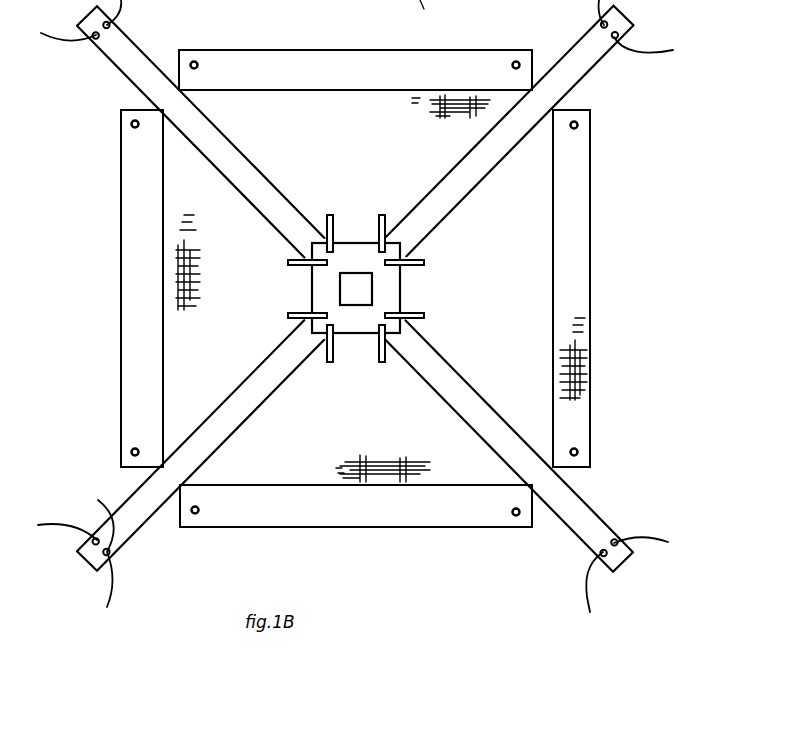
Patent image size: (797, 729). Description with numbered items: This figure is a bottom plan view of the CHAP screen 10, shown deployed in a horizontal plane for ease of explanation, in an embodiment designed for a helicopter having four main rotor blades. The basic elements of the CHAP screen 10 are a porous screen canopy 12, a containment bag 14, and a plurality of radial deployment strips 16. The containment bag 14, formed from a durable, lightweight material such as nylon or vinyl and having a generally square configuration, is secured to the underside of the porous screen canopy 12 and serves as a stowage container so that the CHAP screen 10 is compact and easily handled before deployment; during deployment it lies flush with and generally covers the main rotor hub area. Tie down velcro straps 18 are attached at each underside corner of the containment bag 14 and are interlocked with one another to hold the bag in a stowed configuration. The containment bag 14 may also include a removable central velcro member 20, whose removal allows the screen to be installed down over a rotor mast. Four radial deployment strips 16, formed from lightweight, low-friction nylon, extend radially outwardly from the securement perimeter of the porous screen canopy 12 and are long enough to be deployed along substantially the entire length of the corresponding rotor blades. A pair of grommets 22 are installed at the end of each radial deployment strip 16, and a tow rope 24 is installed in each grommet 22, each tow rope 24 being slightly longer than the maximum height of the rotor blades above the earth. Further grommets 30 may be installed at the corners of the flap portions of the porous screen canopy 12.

The CHAP screen 10 is at (367, 306).
The porous screen canopy 12 is at (592, 201).
The containment bag 14 is at (388, 286).
The radial deployment strips 16 is at (248, 392).
The tie down velcro straps 18 is at (380, 228).
The removable central velcro member 20 is at (347, 290).
The grommets 22 is at (97, 538).
The tow rope 24 is at (58, 525).
The grommets 30 is at (200, 509).